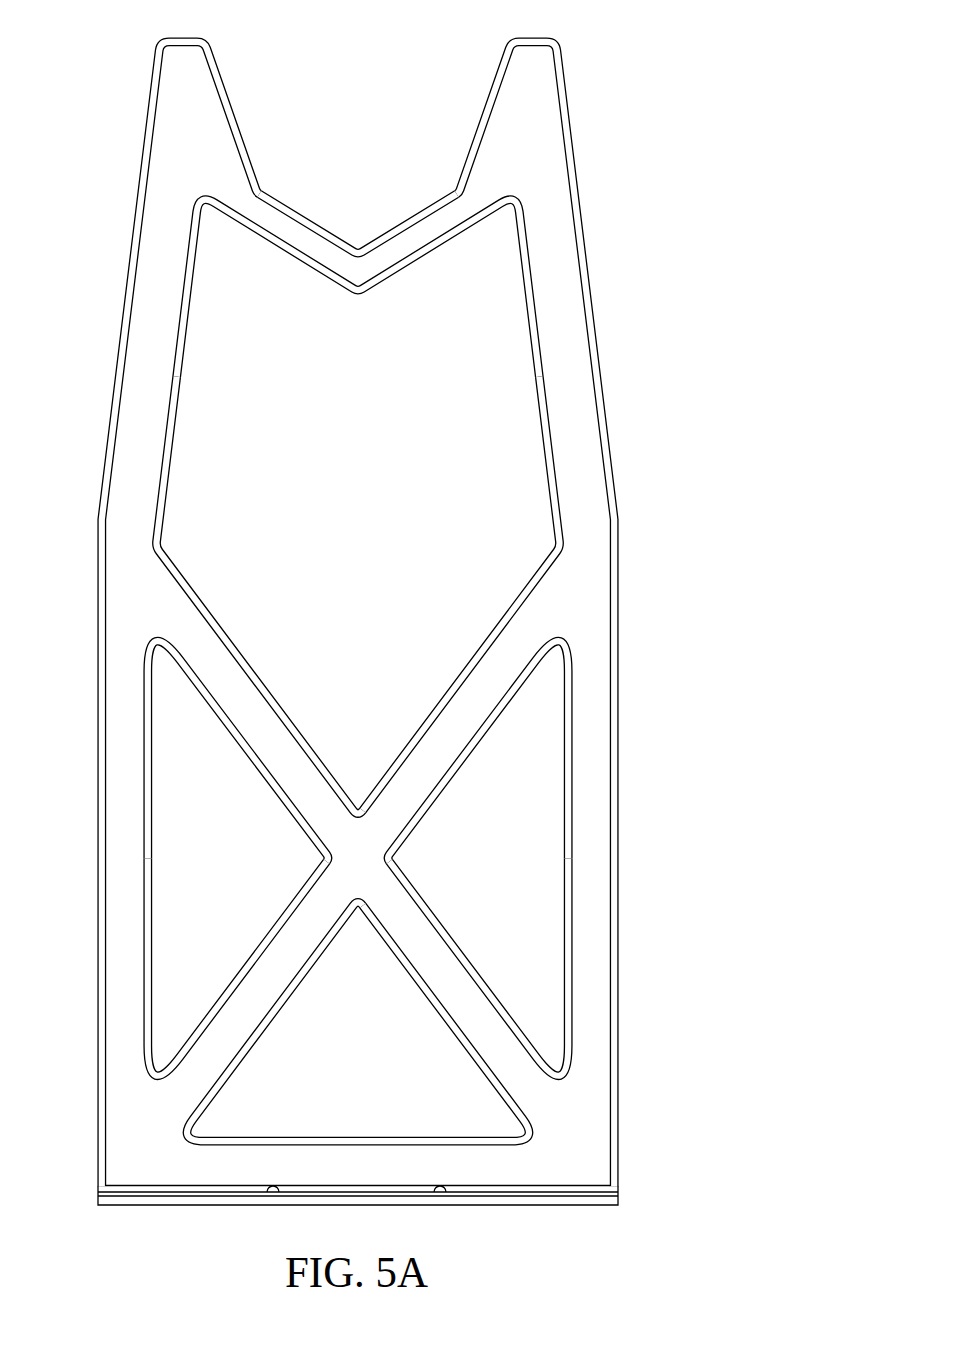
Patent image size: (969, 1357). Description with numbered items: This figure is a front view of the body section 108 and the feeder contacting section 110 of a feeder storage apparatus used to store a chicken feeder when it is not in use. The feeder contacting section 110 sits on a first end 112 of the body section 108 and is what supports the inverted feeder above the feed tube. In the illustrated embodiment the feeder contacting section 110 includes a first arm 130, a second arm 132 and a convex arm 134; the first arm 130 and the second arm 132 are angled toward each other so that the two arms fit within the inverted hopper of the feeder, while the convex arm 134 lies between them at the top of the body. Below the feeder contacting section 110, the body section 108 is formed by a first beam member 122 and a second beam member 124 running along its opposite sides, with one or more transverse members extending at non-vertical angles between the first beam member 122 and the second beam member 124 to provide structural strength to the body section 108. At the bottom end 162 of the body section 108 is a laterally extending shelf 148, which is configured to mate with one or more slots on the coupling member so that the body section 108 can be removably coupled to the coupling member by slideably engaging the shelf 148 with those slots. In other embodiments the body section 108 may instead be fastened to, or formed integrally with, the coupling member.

The body section 108 is at (393, 822).
The feeder contacting section 110 is at (393, 654).
The first end 112 is at (397, 281).
The first beam member 122 is at (97, 901).
The second beam member 124 is at (620, 899).
The first arm 130 is at (129, 270).
The second arm 132 is at (588, 268).
The convex arm 134 is at (283, 253).
The laterally extending shelf 148 is at (545, 1208).
The bottom end 162 is at (657, 1192).